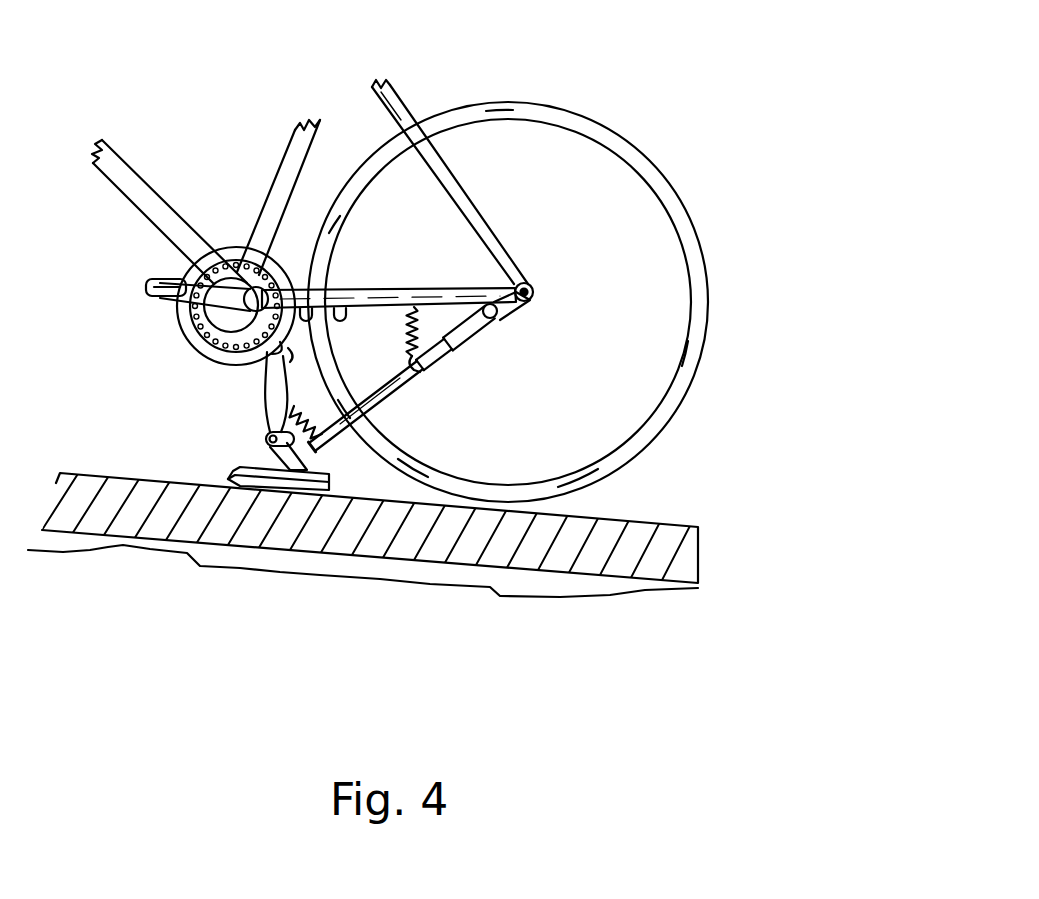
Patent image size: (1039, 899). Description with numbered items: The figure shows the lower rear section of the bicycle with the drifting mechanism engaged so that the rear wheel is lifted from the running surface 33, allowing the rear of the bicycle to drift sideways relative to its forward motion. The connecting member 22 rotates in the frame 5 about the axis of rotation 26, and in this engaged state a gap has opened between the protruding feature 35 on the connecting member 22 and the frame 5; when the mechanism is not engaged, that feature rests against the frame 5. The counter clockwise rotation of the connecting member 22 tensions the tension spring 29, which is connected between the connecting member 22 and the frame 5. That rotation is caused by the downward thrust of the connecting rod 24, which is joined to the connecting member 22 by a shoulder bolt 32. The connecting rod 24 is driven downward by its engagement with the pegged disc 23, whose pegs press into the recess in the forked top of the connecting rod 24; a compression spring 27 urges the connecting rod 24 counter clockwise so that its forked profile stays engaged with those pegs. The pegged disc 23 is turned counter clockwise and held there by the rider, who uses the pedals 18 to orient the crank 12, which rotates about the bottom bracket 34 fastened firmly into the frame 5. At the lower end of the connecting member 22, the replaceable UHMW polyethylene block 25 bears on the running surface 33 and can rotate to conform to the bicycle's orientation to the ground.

The frame 5 is at (302, 130).
The crank 12 is at (222, 290).
The pedals 18 is at (156, 281).
The connecting member 22 is at (363, 412).
The pegged disc 23 is at (195, 342).
The connecting rod 24 is at (268, 386).
The UHMW polyethylene block 25 is at (290, 483).
The axis of rotation 26 is at (524, 292).
The compression spring 27 is at (288, 428).
The tension spring 29 is at (422, 302).
The shoulder bolt 32 is at (267, 440).
The running surface 33 is at (487, 543).
The bottom bracket 34 is at (249, 270).
The protruding feature 35 is at (500, 312).